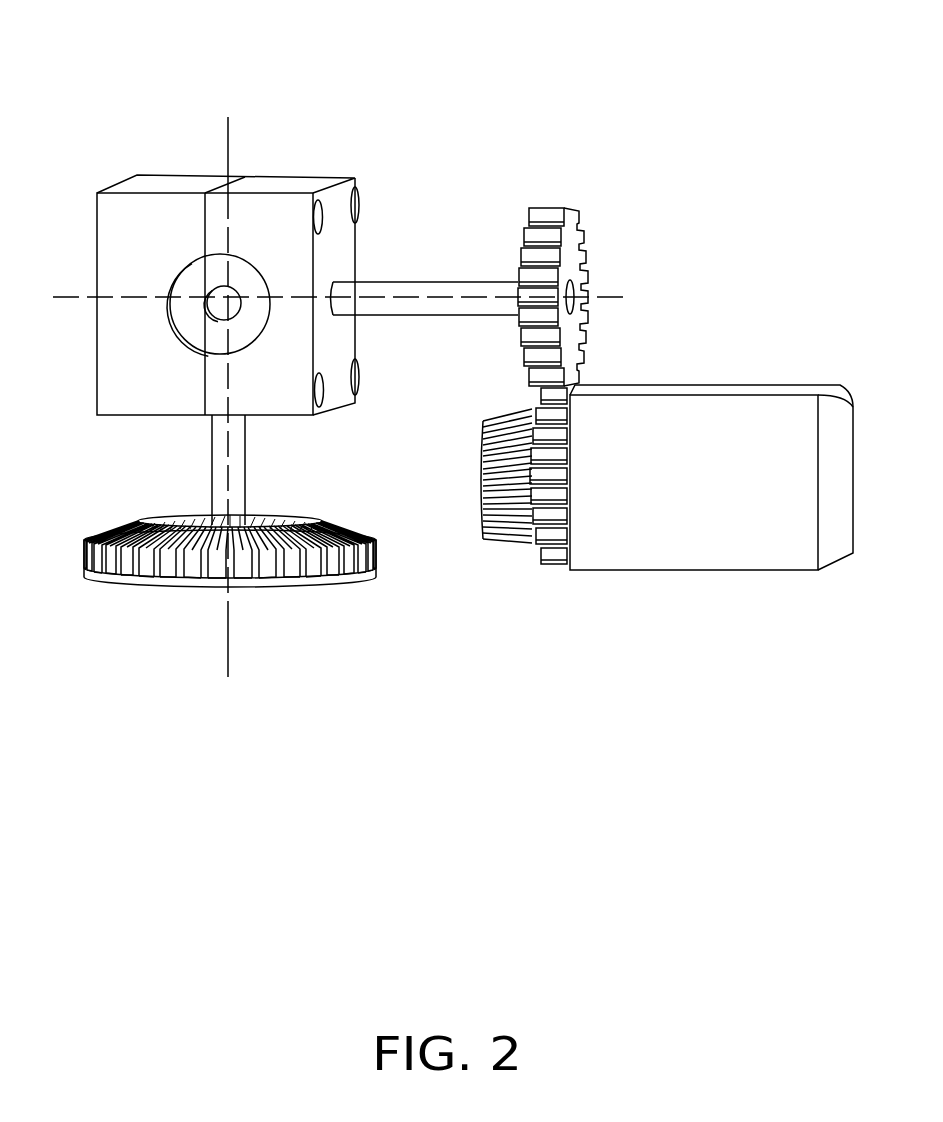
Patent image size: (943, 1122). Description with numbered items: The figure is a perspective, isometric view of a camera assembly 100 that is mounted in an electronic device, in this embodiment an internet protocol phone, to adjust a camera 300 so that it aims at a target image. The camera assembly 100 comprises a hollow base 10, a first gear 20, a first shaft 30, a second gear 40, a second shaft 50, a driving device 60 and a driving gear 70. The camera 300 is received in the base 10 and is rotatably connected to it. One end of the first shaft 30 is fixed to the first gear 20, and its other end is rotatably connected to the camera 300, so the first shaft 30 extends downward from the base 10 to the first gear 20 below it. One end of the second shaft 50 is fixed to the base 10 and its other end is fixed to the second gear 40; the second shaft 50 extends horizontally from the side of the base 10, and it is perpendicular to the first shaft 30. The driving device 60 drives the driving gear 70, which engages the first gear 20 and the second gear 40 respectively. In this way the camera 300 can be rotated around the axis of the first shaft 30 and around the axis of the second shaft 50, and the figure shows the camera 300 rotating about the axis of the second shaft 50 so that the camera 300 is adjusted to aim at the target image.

The camera assembly 100 is at (400, 88).
The hollow base 10 is at (290, 183).
The camera 300 is at (187, 280).
The second shaft 50 is at (395, 288).
The second gear 40 is at (545, 217).
The driving device 60 is at (697, 393).
The driving gear 70 is at (543, 538).
The first shaft 30 is at (220, 472).
The first gear 20 is at (167, 577).